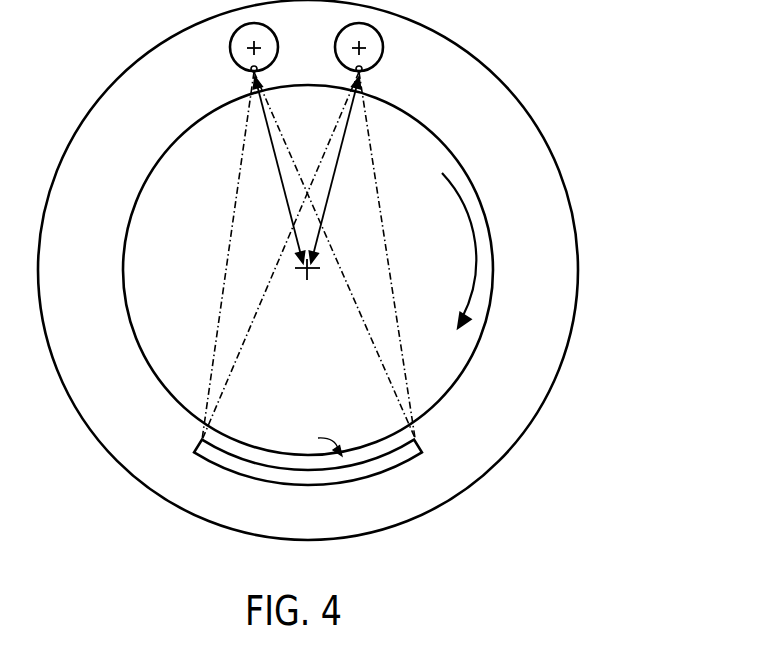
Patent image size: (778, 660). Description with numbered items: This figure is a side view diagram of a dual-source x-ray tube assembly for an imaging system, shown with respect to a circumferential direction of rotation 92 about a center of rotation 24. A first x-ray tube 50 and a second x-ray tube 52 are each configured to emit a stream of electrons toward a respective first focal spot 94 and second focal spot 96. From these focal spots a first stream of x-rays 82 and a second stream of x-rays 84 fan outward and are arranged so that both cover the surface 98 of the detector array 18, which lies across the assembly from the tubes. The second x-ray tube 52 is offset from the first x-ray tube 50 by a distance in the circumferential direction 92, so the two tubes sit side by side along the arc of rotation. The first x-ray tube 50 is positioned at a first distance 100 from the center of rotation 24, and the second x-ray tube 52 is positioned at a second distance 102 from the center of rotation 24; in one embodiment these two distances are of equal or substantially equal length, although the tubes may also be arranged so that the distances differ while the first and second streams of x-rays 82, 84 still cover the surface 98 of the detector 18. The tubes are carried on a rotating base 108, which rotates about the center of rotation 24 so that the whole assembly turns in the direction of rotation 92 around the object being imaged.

The detector array 18 is at (372, 475).
The center of rotation 24 is at (305, 290).
The first x-ray tube 50 is at (232, 55).
The second x-ray tube 52 is at (382, 55).
The first stream of x-rays 82 is at (224, 293).
The second stream of x-rays 84 is at (392, 169).
The direction of rotation 92 is at (444, 207).
The first focal spot 94 is at (251, 71).
The second focal spot 96 is at (362, 71).
The surface of detector array 98 is at (318, 442).
The first distance 100 is at (280, 172).
The second distance 102 is at (334, 172).
The rotating base 108 is at (498, 134).